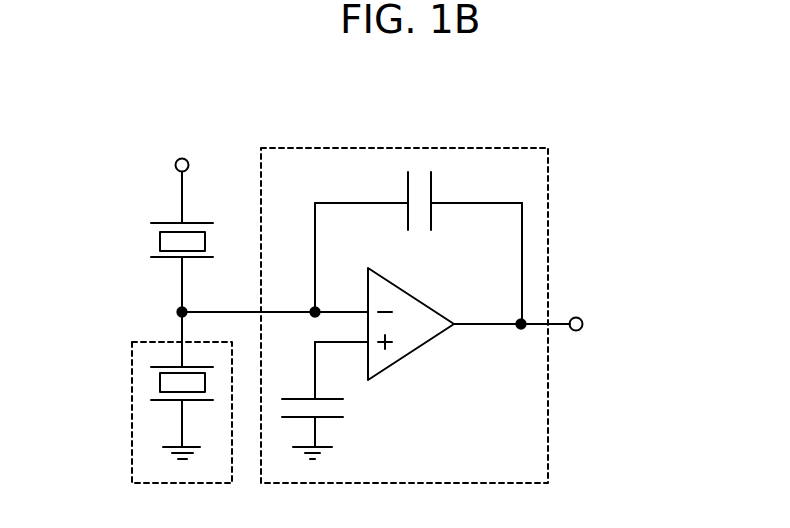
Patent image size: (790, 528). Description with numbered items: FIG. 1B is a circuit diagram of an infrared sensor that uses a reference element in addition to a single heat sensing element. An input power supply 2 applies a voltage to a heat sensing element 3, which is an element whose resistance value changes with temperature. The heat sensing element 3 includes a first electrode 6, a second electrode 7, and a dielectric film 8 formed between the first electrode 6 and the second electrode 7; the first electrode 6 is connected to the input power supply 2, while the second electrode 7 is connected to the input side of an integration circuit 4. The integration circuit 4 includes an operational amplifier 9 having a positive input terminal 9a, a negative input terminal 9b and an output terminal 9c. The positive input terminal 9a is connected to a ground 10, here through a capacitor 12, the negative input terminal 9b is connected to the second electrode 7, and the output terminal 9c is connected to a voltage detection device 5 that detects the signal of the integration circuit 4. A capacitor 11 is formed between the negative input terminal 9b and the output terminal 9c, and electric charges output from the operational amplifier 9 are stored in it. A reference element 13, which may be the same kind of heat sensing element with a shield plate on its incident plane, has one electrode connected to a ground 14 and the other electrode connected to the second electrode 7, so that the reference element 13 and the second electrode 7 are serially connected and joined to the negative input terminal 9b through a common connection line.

The input power supply 2 is at (197, 132).
The heat sensing element 3 is at (156, 236).
The integration circuit 4 is at (502, 138).
The voltage detection device 5 is at (612, 312).
The first electrode 6 is at (195, 223).
The second electrode 7 is at (200, 258).
The dielectric film 8 is at (160, 240).
The operational amplifier 9 is at (400, 285).
The positive input terminal 9a is at (368, 343).
The negative input terminal 9b is at (368, 305).
The output terminal 9c is at (457, 323).
The ground 10 is at (332, 447).
The capacitor 11 is at (431, 190).
The capacitor 12 is at (343, 399).
The reference element 13 is at (144, 412).
The ground 14 is at (163, 447).